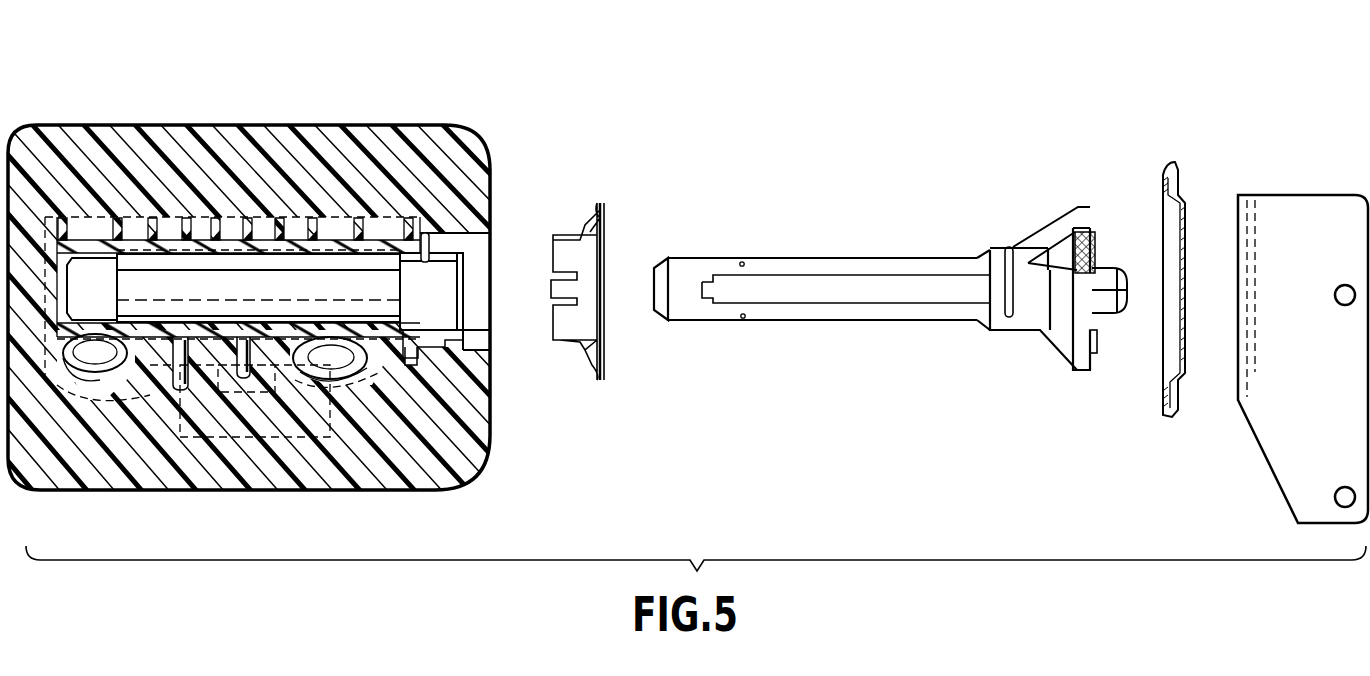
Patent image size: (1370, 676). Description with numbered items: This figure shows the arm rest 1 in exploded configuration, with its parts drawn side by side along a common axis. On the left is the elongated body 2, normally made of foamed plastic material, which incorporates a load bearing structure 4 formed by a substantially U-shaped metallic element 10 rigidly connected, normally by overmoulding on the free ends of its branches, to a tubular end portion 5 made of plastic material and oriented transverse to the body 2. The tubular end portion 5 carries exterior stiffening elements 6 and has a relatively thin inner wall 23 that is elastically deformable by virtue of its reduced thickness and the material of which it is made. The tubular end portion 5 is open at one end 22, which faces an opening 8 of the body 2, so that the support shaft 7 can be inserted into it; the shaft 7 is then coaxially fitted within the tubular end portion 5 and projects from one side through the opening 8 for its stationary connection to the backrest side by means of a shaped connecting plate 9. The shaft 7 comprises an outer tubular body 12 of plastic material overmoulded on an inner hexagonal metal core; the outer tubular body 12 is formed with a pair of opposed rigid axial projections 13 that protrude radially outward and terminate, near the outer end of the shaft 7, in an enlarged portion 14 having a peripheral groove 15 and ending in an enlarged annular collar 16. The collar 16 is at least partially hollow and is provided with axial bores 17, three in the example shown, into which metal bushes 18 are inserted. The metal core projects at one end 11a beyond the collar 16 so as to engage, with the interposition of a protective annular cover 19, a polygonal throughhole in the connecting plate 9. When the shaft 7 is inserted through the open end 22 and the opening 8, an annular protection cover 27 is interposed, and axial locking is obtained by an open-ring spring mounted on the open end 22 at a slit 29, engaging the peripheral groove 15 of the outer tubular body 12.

The arm rest 1 is at (674, 112).
The elongated body 2 is at (368, 135).
The load bearing structure 4 is at (402, 210).
The tubular end portion 5 is at (82, 228).
The exterior stiffening elements 6 is at (213, 227).
The support shaft 7 is at (822, 243).
The opening 8 is at (490, 233).
The shaped connecting plate 9 is at (1293, 212).
The U-shaped metallic element 10 is at (82, 380).
The end of inner metal core 11a is at (1105, 312).
The outer tubular body 12 is at (763, 257).
The axial projections 13 is at (868, 284).
The enlarged portion 14 is at (1027, 313).
The peripheral groove 15 is at (1011, 262).
The enlarged annular collar 16 is at (1080, 353).
The axial bores 17 is at (1080, 207).
The metal bushes 18 is at (1094, 237).
The protective annular cover 19 is at (1184, 205).
The open end 22 is at (468, 331).
The inner wall 23 is at (290, 253).
The annular protection cover 27 is at (590, 215).
The slit 29 is at (430, 235).